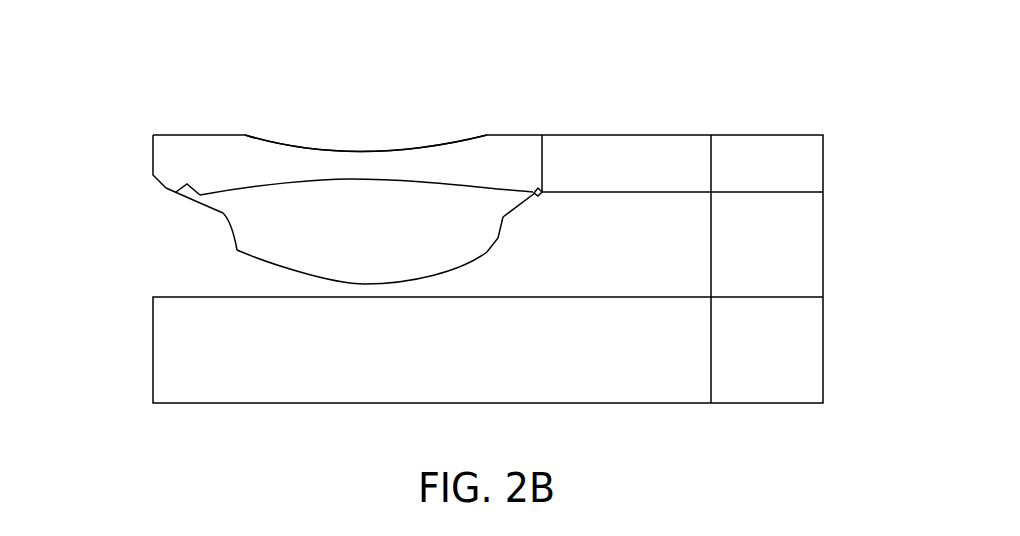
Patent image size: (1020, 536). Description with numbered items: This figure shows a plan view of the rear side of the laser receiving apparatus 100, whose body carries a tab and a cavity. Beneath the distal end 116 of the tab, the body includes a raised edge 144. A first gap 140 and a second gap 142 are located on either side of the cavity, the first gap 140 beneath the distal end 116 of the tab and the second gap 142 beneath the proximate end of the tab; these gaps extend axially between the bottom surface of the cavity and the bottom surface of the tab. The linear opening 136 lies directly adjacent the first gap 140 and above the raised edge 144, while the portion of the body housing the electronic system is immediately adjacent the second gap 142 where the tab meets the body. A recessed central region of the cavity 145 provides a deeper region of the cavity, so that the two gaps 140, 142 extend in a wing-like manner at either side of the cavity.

The laser receiving apparatus 100 is at (156, 95).
The distal end 116 is at (163, 153).
The linear opening 136 is at (174, 190).
The first gap 140 is at (197, 192).
The second gap 142 is at (535, 188).
The raised edge 144 is at (173, 200).
The recessed central region of the cavity 145 is at (494, 222).